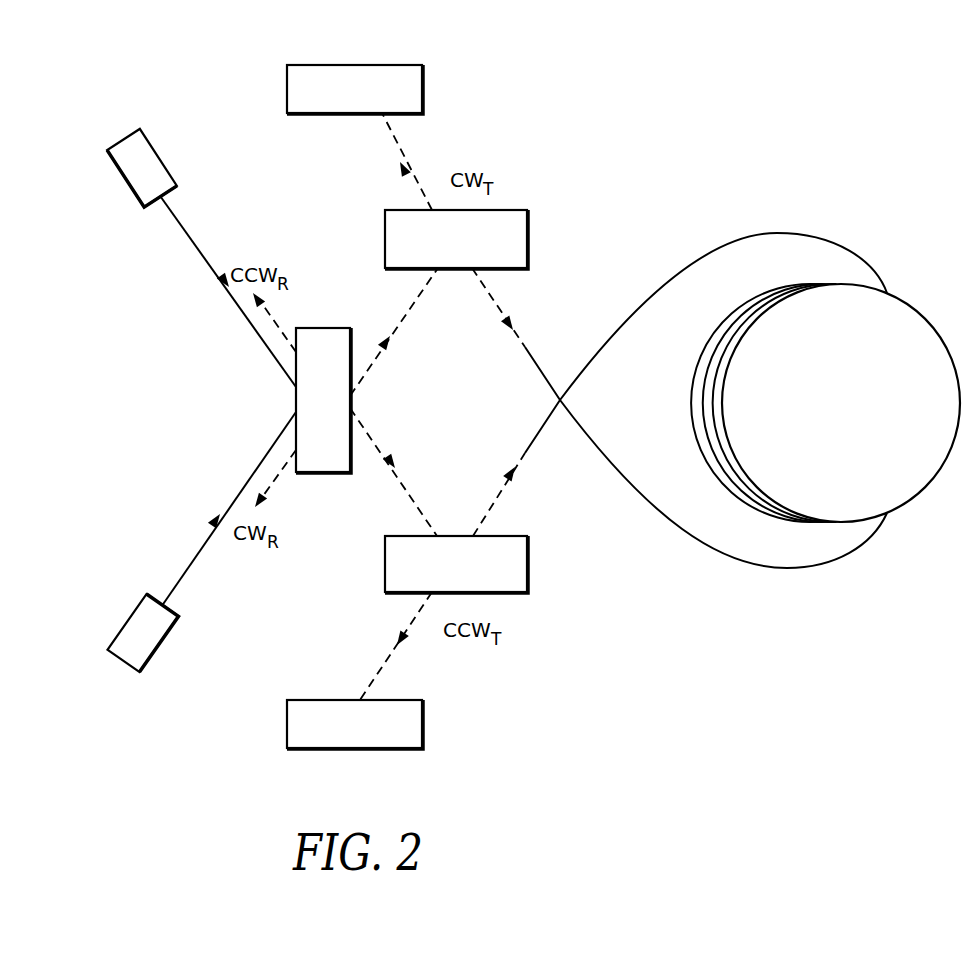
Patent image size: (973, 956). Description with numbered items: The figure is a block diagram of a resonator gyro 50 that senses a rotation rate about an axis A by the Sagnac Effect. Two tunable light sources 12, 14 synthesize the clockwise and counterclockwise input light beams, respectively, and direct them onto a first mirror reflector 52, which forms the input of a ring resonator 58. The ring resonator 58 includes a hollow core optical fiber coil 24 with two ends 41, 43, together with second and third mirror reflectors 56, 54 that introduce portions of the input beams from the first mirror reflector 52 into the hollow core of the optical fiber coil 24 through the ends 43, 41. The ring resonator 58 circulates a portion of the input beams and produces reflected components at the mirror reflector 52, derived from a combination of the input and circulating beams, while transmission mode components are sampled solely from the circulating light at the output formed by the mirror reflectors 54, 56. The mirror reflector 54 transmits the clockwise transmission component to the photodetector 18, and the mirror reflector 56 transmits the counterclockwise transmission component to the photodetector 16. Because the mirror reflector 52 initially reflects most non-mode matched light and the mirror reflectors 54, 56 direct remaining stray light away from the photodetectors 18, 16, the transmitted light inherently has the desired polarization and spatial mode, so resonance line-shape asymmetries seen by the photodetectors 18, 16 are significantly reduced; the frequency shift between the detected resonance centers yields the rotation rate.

The resonator gyro 50 is at (214, 65).
The tunable light source 12 is at (159, 156).
The tunable light source 14 is at (132, 620).
The photodetector 16 is at (405, 700).
The photodetector 18 is at (403, 65).
The first mirror reflector 52 is at (340, 328).
The third mirror reflector 54 is at (508, 210).
The second mirror reflector 56 is at (508, 536).
The ring resonator 58 is at (618, 213).
The hollow core optical fiber coil 24 is at (805, 236).
The end of optical fiber 41 is at (563, 366).
The end of optical fiber 43 is at (560, 432).
The axis A is at (878, 398).